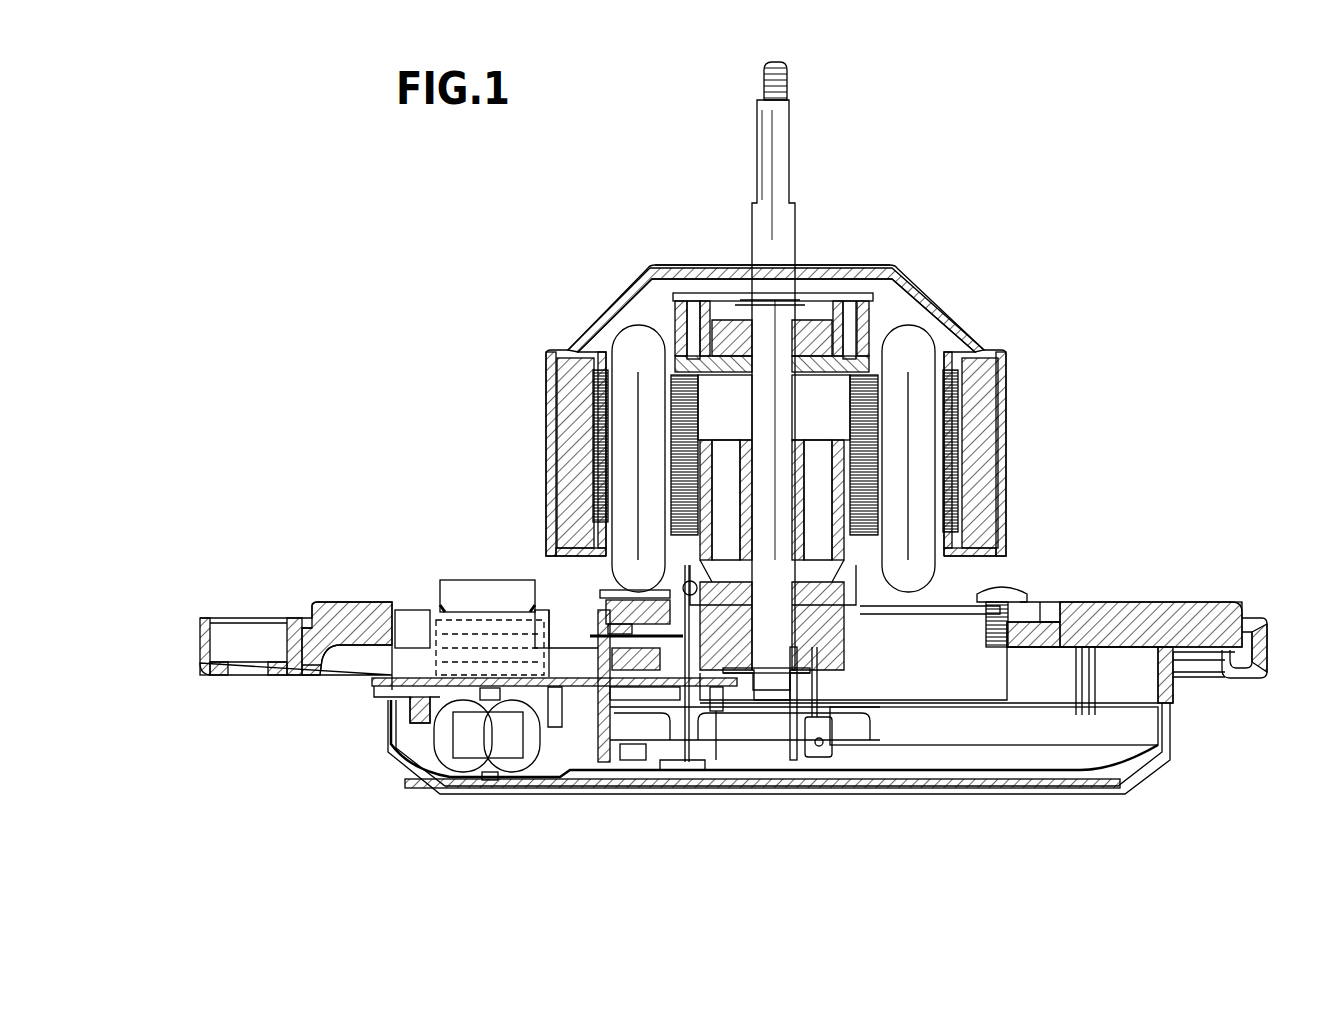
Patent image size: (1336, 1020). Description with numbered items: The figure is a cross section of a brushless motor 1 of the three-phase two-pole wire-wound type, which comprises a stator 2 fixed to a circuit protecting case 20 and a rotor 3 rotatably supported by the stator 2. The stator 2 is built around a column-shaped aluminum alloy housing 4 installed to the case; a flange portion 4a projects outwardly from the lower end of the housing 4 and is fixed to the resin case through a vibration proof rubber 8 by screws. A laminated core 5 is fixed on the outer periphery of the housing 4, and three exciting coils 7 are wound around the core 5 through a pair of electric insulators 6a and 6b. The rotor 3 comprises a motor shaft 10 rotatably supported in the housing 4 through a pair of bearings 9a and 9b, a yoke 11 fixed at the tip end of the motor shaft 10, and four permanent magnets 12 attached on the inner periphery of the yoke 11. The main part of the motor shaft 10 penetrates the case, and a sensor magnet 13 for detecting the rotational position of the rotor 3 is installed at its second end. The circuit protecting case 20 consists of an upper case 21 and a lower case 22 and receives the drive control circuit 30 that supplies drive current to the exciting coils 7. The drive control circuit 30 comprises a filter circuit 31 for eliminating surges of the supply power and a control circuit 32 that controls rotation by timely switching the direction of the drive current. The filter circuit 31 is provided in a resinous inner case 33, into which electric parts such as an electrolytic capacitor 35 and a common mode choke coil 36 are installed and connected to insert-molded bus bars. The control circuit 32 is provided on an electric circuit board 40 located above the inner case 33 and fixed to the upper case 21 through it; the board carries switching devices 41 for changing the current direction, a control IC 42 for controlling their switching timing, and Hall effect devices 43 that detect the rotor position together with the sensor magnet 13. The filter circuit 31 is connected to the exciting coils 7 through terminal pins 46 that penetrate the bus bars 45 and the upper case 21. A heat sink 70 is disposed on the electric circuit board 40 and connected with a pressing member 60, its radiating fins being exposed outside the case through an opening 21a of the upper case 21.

The brushless motor 1 is at (968, 212).
The stator 2 is at (945, 350).
The rotor 3 is at (874, 256).
The housing 4 is at (915, 365).
The flange portion 4a is at (960, 610).
The core 5 is at (600, 408).
The electric insulator 6a is at (878, 305).
The electric insulator 6b is at (900, 528).
The exciting coils 7 is at (640, 335).
The vibration proof rubber 8 is at (1030, 600).
The bearing 9a is at (815, 312).
The bearing 9b is at (690, 588).
The motor shaft 10 is at (770, 160).
The yoke 11 is at (905, 265).
The permanent magnets 12 is at (566, 437).
The sensor magnet 13 is at (845, 660).
The circuit protecting case 20 is at (1258, 700).
The upper case 21 is at (1175, 698).
The opening 21a is at (444, 612).
The lower case 22 is at (1172, 745).
The drive control circuit 30 is at (718, 836).
The filter circuit 31 is at (701, 745).
The control circuit 32 is at (565, 690).
The inner case 33 is at (886, 728).
The electrolytic capacitor 35 is at (625, 748).
The common mode choke coil 36 is at (492, 781).
The electric circuit board 40 is at (572, 690).
The switching devices 41 is at (412, 625).
The control IC 42 is at (592, 630).
The Hall effect devices 43 is at (720, 690).
The bus bars 45 is at (792, 695).
The terminal pins 46 is at (688, 662).
The pressing member 60 is at (430, 655).
The heat sink 70 is at (472, 580).